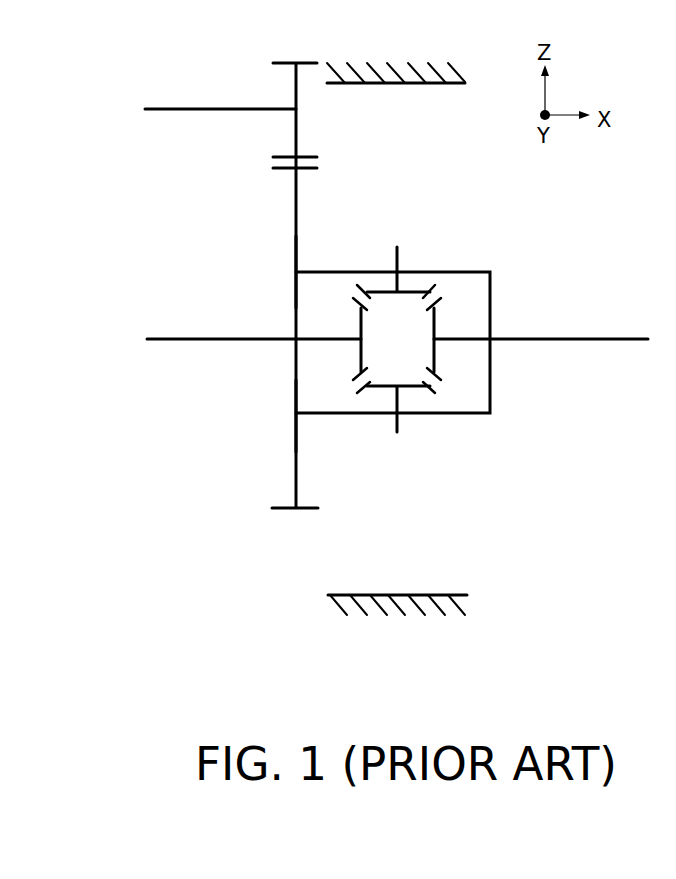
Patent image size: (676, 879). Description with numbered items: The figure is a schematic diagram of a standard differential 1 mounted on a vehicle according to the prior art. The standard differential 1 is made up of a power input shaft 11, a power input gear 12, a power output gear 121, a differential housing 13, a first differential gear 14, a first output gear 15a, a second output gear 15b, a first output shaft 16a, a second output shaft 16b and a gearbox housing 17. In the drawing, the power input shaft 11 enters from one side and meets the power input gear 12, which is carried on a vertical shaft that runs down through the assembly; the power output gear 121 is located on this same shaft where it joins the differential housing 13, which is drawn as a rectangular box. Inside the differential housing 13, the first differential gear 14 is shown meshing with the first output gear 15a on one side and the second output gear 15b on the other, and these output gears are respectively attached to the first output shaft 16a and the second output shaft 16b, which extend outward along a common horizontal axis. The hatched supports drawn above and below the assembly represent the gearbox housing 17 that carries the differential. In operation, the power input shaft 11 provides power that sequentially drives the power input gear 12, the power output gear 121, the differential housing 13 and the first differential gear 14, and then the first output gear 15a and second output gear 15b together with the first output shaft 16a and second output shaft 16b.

The standard differential 1 is at (90, 73).
The power input shaft 11 is at (218, 108).
The power input gear 12 is at (295, 88).
The power output gear 121 is at (296, 305).
The differential housing 13 is at (342, 272).
The first differential gear 14 is at (407, 292).
The first output gear 15a is at (434, 326).
The second output gear 15b is at (361, 323).
The first output shaft 16a is at (465, 340).
The second output shaft 16b is at (323, 340).
The gearbox housing 17 is at (392, 83).